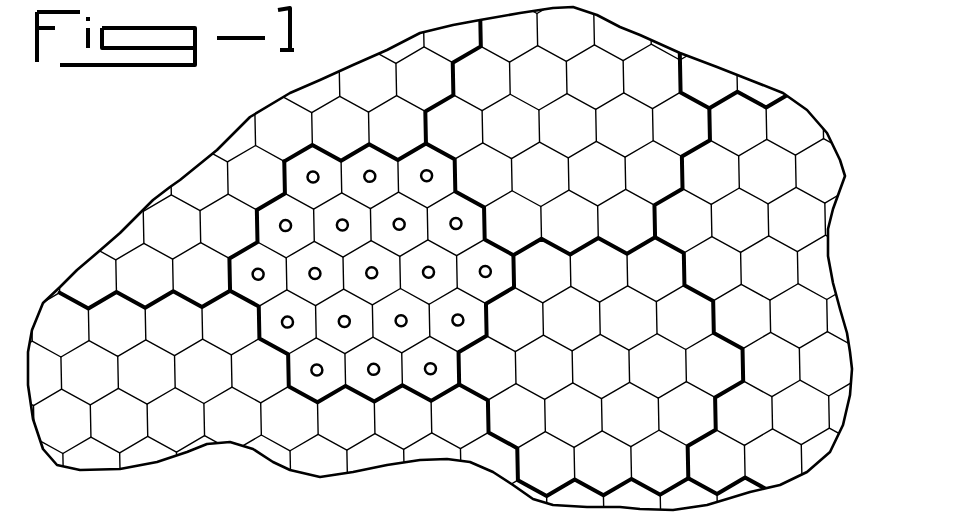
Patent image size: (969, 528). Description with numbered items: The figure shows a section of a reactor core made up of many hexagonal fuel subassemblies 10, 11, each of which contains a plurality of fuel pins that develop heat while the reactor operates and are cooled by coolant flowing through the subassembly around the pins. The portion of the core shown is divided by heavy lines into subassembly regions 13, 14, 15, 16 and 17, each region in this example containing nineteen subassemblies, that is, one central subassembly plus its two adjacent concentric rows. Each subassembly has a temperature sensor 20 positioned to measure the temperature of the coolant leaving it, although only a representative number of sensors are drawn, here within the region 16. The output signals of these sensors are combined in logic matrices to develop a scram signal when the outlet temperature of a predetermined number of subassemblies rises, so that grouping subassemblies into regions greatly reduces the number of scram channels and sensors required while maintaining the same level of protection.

The subassembly 10 is at (515, 190).
The subassembly 11 is at (346, 165).
The subassembly region 13 is at (543, 302).
The subassembly region 14 is at (810, 211).
The subassembly region 15 is at (578, 173).
The subassembly region 16 is at (400, 287).
The subassembly region 17 is at (175, 381).
The temperature sensor 20 is at (266, 272).